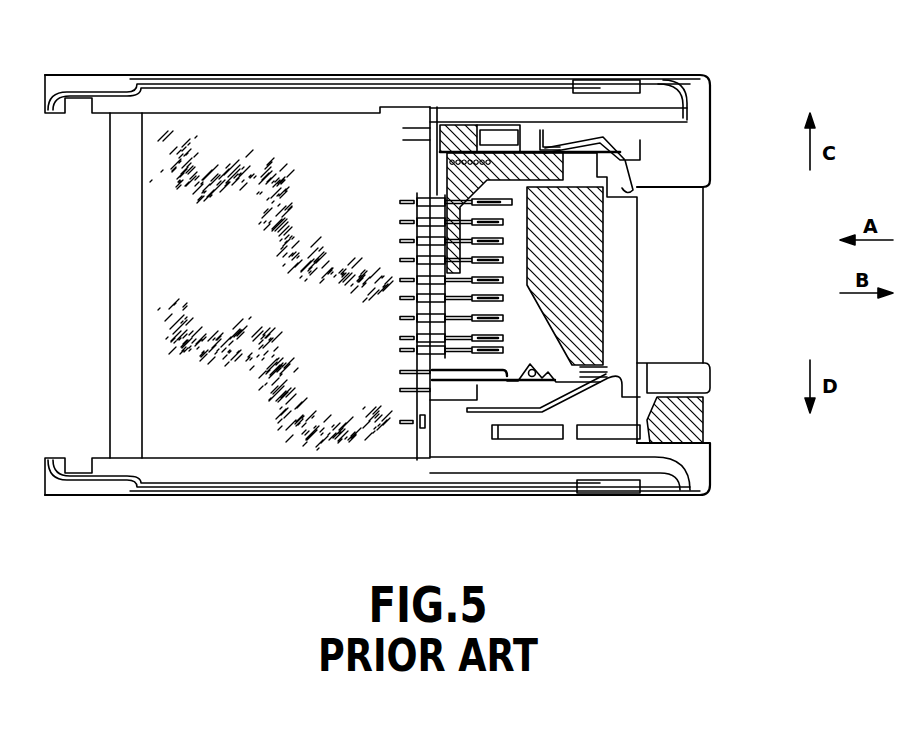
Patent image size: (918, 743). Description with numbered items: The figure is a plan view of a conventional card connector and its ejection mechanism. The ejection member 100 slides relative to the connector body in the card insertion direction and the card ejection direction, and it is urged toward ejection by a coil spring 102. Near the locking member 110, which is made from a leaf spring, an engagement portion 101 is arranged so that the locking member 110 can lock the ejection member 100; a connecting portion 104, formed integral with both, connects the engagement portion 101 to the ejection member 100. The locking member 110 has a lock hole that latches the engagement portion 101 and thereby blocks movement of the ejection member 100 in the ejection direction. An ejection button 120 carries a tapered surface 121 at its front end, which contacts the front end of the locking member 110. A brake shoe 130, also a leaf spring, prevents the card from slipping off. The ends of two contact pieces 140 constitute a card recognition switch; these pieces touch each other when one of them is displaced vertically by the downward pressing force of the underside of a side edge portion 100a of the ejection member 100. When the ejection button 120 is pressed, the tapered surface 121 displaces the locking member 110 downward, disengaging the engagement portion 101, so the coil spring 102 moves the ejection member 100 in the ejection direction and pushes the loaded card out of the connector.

The ejection member 100 is at (525, 160).
The side edge portion 100a is at (447, 125).
The engagement portion 101 is at (530, 285).
The coil spring 102 is at (467, 122).
The connecting portion 104 is at (595, 263).
The locking member 110 is at (603, 378).
The ejection button 120 is at (703, 413).
The tapered surface 121 is at (630, 398).
The brake shoe 130 is at (607, 150).
The ends of two contact pieces 140 is at (404, 119).